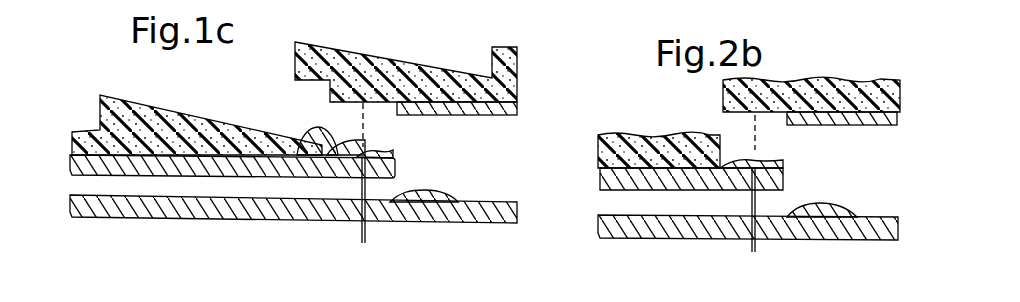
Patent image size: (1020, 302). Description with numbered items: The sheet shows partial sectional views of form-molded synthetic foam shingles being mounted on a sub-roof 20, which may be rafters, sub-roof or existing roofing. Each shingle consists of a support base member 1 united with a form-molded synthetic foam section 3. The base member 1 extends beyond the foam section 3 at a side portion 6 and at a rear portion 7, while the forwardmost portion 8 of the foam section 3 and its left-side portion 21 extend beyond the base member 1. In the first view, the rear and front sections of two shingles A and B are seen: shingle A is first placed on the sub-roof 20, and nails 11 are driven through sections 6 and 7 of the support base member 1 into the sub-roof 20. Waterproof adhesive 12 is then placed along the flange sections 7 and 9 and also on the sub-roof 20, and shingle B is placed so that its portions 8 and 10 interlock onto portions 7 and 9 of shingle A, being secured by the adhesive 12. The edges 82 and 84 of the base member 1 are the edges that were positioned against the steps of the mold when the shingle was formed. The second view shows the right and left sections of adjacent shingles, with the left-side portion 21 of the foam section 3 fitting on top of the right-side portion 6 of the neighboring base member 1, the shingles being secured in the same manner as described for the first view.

In FIG. 1C, the support base member 1 is at (72, 167).
In FIG. 2B, the support base member 1 is at (604, 180).
In FIG. 1C, the form-molded synthetic foam section 3 is at (294, 88).
In FIG. 2B, the form-molded synthetic foam section 3 is at (852, 84).
In FIG. 2B, the side portion of the support base member 6 is at (735, 160).
In FIG. 1C, the rear portion of the support base member 7 is at (362, 146).
In FIG. 1C, the forwardmost portion of the foam section 8 is at (340, 101).
In FIG. 1C, the flange section 9 is at (323, 143).
In FIG. 1C, the interlocking edge portion of the foam section 10 is at (297, 82).
In FIG. 1C, the nails 11 is at (362, 236).
In FIG. 2B, the nails 11 is at (756, 248).
In FIG. 1C, the waterproof adhesive 12 is at (382, 156).
In FIG. 2B, the waterproof adhesive 12 is at (770, 160).
In FIG. 1C, the sub-roof 20 is at (178, 205).
In FIG. 2B, the sub-roof 20 is at (692, 223).
In FIG. 2B, the left-side portion of the foam section 21 is at (728, 113).
In FIG. 2B, the edge of the base member 82 is at (786, 178).
In FIG. 1C, the edge of the base member 84 is at (396, 168).
In FIG. 1C, the form-molded synthetic foam shingle A is at (137, 96).
In FIG. 1C, the form-molded synthetic foam shingle B is at (429, 67).